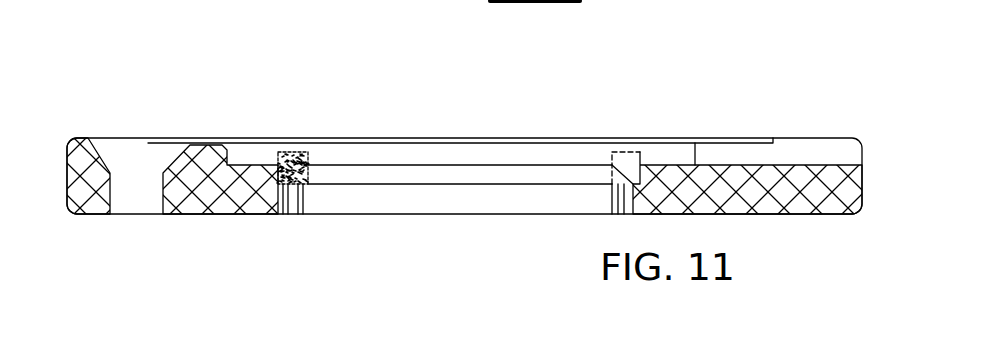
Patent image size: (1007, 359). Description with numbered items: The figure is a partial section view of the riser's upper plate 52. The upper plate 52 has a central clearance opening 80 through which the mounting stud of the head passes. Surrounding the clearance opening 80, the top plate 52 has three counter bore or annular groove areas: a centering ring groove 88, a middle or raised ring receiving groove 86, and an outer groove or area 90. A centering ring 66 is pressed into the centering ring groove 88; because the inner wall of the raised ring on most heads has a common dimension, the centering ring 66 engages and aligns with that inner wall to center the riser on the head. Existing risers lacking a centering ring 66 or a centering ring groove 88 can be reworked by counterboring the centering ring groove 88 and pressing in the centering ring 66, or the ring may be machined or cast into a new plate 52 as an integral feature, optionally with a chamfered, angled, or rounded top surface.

The upper plate 52 is at (797, 153).
The centering ring 66 is at (320, 138).
The central clearance opening 80 is at (442, 203).
The raised ring receiving groove 86 is at (666, 164).
The centering ring groove 88 is at (611, 172).
The outer groove 90 is at (720, 140).